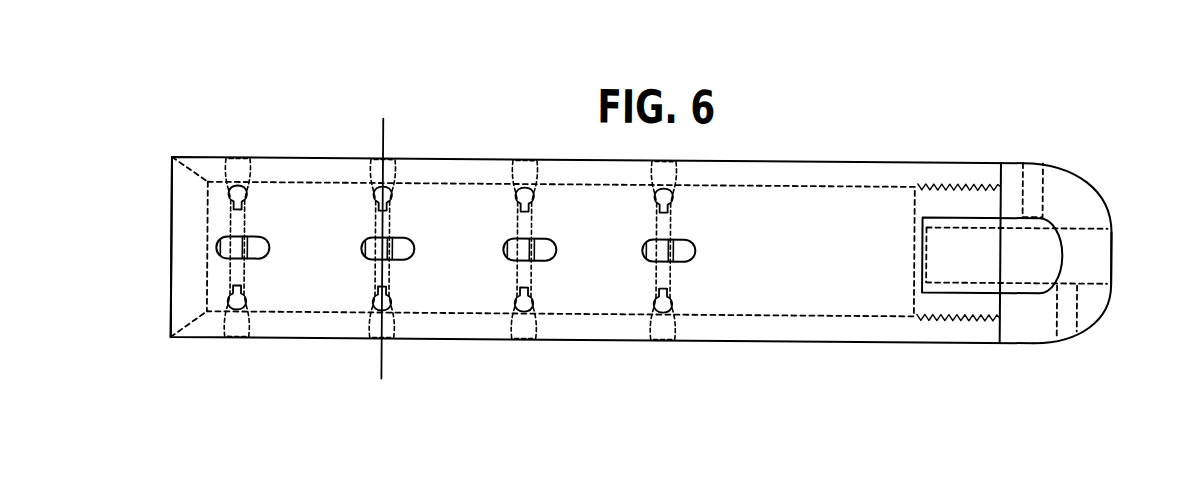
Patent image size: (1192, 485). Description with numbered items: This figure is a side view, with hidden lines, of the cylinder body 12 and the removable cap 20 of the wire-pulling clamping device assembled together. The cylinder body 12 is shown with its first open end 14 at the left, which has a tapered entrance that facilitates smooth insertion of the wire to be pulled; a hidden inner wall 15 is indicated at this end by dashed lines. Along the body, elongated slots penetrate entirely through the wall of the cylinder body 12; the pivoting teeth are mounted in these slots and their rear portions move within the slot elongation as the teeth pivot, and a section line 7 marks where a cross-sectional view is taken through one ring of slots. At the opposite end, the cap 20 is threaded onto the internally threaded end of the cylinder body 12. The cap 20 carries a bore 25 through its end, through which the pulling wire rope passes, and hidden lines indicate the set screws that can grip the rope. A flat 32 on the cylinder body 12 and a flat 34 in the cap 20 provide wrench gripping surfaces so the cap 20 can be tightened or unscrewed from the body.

The section line 7- 7 is at (410, 377).
The cylinder body 12 is at (780, 338).
The first open end 14 is at (172, 318).
The inner end wall 15 is at (174, 180).
The removable cap 20 is at (1022, 338).
The bore 25 is at (1112, 240).
The flat 32 is at (965, 238).
The flat 34 is at (1033, 265).